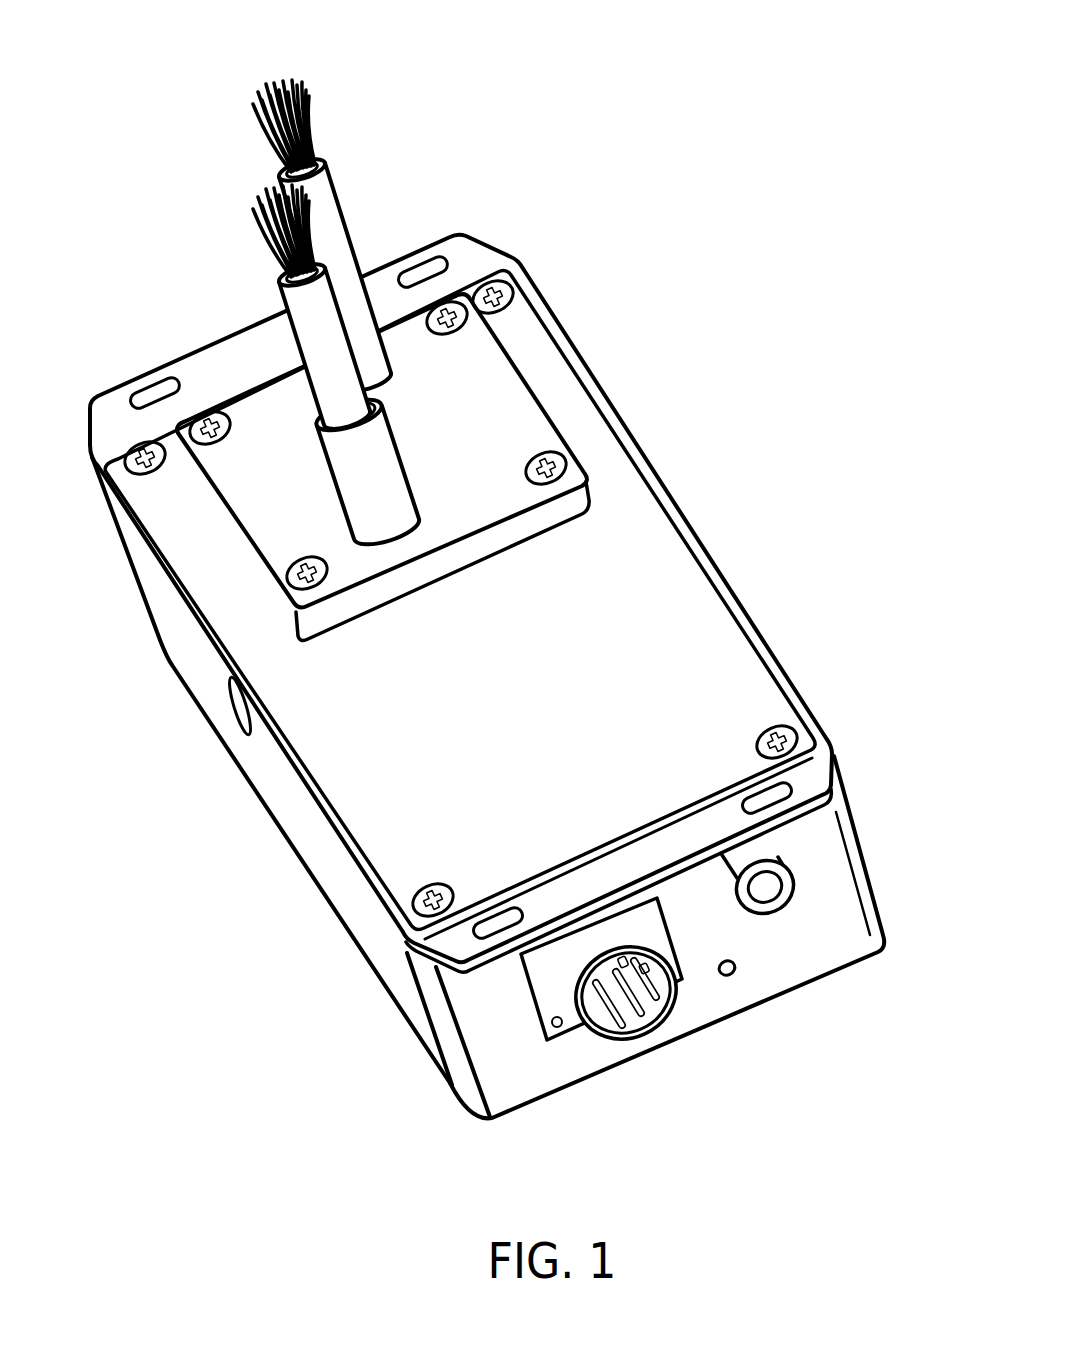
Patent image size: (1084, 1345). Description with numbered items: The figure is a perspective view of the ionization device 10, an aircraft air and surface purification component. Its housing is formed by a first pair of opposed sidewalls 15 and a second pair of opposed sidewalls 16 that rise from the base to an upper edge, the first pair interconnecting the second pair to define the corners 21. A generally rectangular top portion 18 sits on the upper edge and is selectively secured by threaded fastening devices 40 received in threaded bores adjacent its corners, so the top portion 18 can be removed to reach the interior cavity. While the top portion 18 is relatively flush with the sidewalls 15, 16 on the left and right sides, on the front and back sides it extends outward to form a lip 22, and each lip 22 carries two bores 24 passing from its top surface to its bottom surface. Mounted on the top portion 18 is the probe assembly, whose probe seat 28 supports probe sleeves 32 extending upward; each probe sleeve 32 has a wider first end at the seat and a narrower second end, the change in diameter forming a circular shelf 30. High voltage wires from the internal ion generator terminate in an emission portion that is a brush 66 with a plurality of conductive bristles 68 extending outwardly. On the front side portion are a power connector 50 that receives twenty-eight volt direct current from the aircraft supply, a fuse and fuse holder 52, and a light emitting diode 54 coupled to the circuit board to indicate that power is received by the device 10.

The ionization device 10 is at (668, 218).
The first pair of opposed sidewalls 15 is at (306, 843).
The second pair of opposed sidewalls 16 is at (520, 1087).
The top portion 18 is at (660, 580).
The corners 21 is at (470, 1097).
The lip 22 is at (468, 250).
The bore 24 is at (152, 387).
The probe seat 28 is at (283, 525).
The circular shelf 30 is at (317, 431).
The probe sleeve 32 is at (310, 347).
The fastening device 40 is at (783, 718).
The power connector 50 is at (674, 1000).
The fuse and fuse holder 52 is at (790, 862).
The light emitting diode (LED) 54 is at (742, 977).
The brush 66 is at (369, 197).
The bristles 68 is at (310, 87).